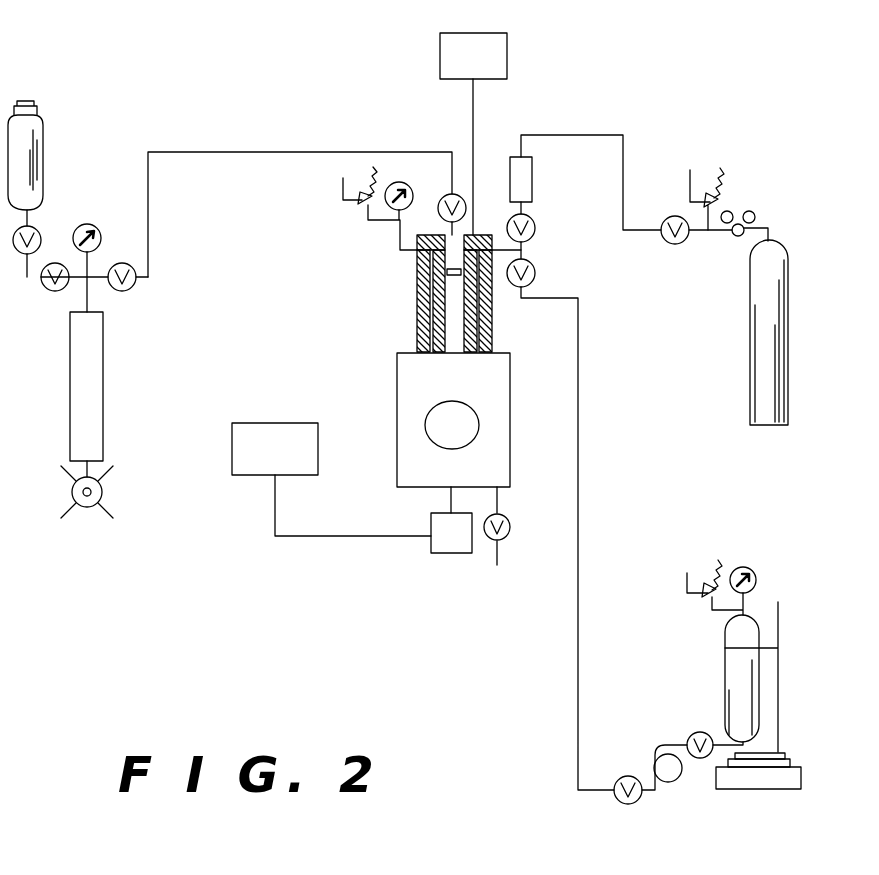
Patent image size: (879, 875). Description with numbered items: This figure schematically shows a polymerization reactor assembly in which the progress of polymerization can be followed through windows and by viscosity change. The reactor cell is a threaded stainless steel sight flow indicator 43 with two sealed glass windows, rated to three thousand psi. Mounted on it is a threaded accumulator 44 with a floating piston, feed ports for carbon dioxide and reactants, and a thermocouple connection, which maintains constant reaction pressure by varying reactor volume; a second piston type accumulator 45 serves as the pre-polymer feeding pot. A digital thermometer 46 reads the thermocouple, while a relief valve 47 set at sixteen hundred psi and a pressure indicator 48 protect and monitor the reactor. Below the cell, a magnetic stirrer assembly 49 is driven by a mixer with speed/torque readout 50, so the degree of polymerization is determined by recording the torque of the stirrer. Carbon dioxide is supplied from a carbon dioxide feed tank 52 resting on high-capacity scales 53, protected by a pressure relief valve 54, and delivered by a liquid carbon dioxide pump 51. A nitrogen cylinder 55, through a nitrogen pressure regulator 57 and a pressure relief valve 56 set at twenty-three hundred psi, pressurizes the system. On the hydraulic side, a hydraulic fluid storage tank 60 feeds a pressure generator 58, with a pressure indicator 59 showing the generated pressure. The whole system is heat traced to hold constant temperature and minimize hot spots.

The sight flow indicator 43 is at (500, 452).
The threaded accumulator 44 is at (456, 318).
The piston type accumulator 45 is at (533, 178).
The digital thermometer 46 is at (508, 54).
The relief valve 47 is at (366, 194).
The pressure indicator 48 is at (406, 182).
The magnetic stirrer assembly 49 is at (440, 555).
The mixer with speed/torque readout 50 is at (231, 450).
The liquid carbon dioxide pump 51 is at (674, 780).
The carbon dioxide feed tank 52 is at (740, 715).
The high-capacity scales 53 is at (785, 789).
The pressure relief valve 54 is at (710, 590).
The nitrogen cylinder 55 is at (770, 270).
The pressure relief valve 56 is at (706, 195).
The nitrogen pressure regulator 57 is at (758, 218).
The pressure generator 58 is at (103, 368).
The pressure indicator 59 is at (88, 224).
The hydraulic fluid storage tank 60 is at (43, 157).